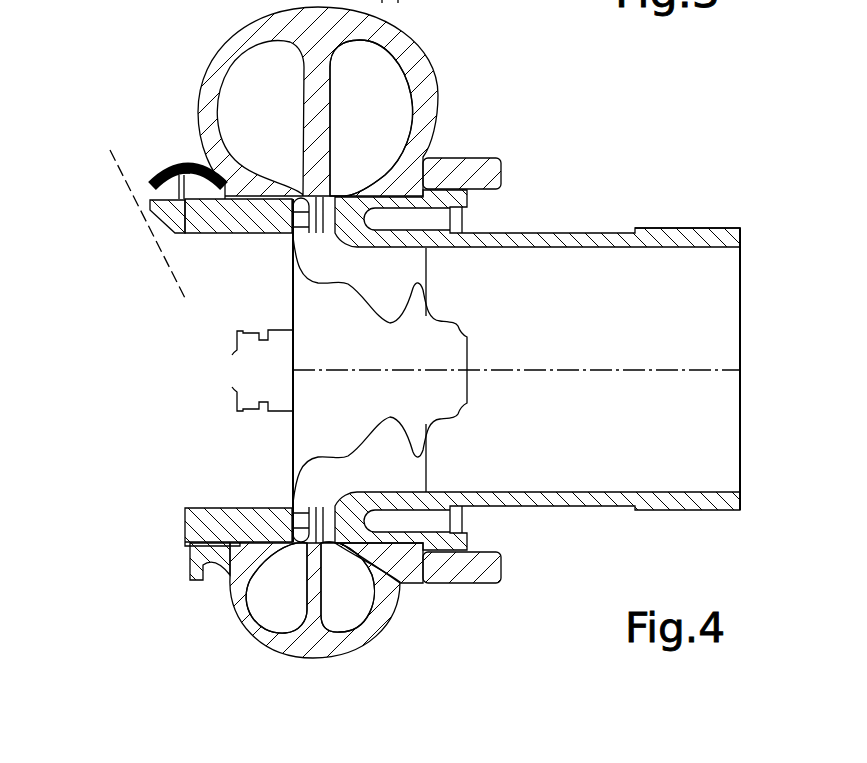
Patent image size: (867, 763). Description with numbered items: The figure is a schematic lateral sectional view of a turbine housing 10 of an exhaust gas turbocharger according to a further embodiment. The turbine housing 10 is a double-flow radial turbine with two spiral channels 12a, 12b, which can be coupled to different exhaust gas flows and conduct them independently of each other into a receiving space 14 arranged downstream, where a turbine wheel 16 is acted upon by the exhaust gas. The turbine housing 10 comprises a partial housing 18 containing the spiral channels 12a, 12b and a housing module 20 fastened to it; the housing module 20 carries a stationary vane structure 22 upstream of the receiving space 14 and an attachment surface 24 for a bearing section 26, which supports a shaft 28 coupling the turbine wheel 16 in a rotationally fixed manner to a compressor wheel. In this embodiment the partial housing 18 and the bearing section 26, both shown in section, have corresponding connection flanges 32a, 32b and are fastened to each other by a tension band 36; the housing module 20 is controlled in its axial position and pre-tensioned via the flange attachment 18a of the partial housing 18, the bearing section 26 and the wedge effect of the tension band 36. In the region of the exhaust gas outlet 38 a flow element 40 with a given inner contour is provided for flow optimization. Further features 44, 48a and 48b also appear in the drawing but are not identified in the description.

The turbine housing 10 is at (587, 113).
The spiral channel 12a is at (250, 71).
The spiral channel 12b is at (374, 99).
The receiving space 14 is at (457, 459).
The turbine wheel 16 is at (450, 340).
The partial housing 18 is at (502, 176).
The flange attachment 18a is at (415, 196).
The housing module 20 is at (224, 234).
The vane structure 22 is at (297, 197).
The attachment surface 24 is at (152, 216).
The bearing section 26 is at (168, 234).
The shaft 28 is at (240, 379).
The connection flange 32a is at (195, 164).
The connection flange 32b is at (147, 183).
The tension band 36 is at (173, 162).
The exhaust gas outlet 38 is at (702, 319).
The flow element 40 is at (690, 228).
The lower seal ring 44 is at (286, 655).
The lower first chamber 48a is at (298, 552).
The lower second chamber 48b is at (328, 546).